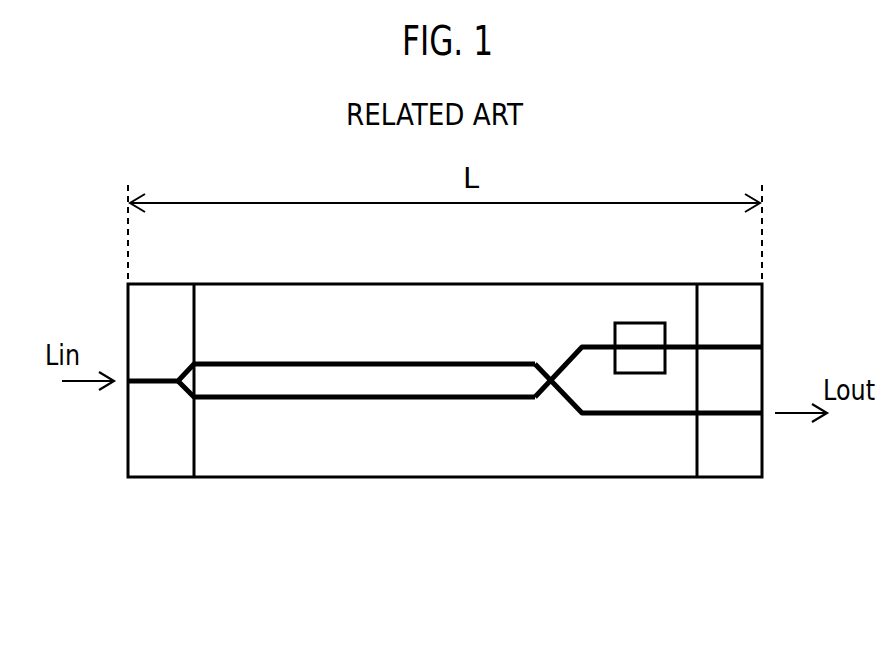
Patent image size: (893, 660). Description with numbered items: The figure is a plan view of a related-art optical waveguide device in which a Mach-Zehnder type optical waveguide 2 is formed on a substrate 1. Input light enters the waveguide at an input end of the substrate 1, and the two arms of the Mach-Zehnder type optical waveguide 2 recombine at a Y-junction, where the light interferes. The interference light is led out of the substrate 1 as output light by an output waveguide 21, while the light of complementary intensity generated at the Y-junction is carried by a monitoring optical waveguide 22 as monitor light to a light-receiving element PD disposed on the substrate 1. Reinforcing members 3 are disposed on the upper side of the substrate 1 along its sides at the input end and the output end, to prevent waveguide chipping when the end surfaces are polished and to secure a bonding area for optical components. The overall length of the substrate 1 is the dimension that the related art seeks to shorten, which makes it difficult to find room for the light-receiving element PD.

The substrate 1 is at (420, 443).
The Mach-Zehnder type optical waveguide 2 is at (300, 404).
The output waveguide 21 is at (567, 403).
The monitoring optical waveguide 22 is at (560, 365).
The reinforcing members 3 is at (723, 448).
The light-receiving element PD is at (636, 323).